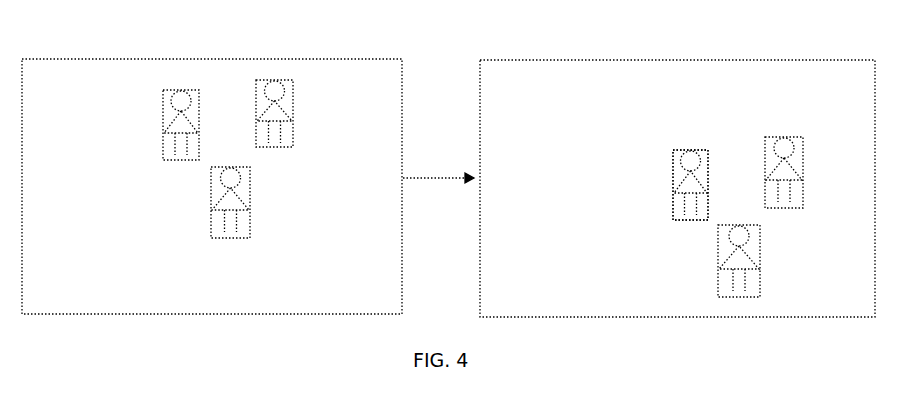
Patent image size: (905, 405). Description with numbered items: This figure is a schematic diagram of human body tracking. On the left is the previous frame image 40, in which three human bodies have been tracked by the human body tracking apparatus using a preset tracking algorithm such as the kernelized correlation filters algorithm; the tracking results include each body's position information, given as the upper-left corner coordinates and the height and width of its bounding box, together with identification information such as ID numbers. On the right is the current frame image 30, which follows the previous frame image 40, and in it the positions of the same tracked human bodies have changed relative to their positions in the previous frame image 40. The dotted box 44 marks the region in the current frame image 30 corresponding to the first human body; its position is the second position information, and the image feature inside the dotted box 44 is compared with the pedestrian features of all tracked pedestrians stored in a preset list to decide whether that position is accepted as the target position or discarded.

The current frame image 30 is at (727, 60).
The previous frame image 40 is at (265, 59).
The dotted box 44 is at (677, 218).